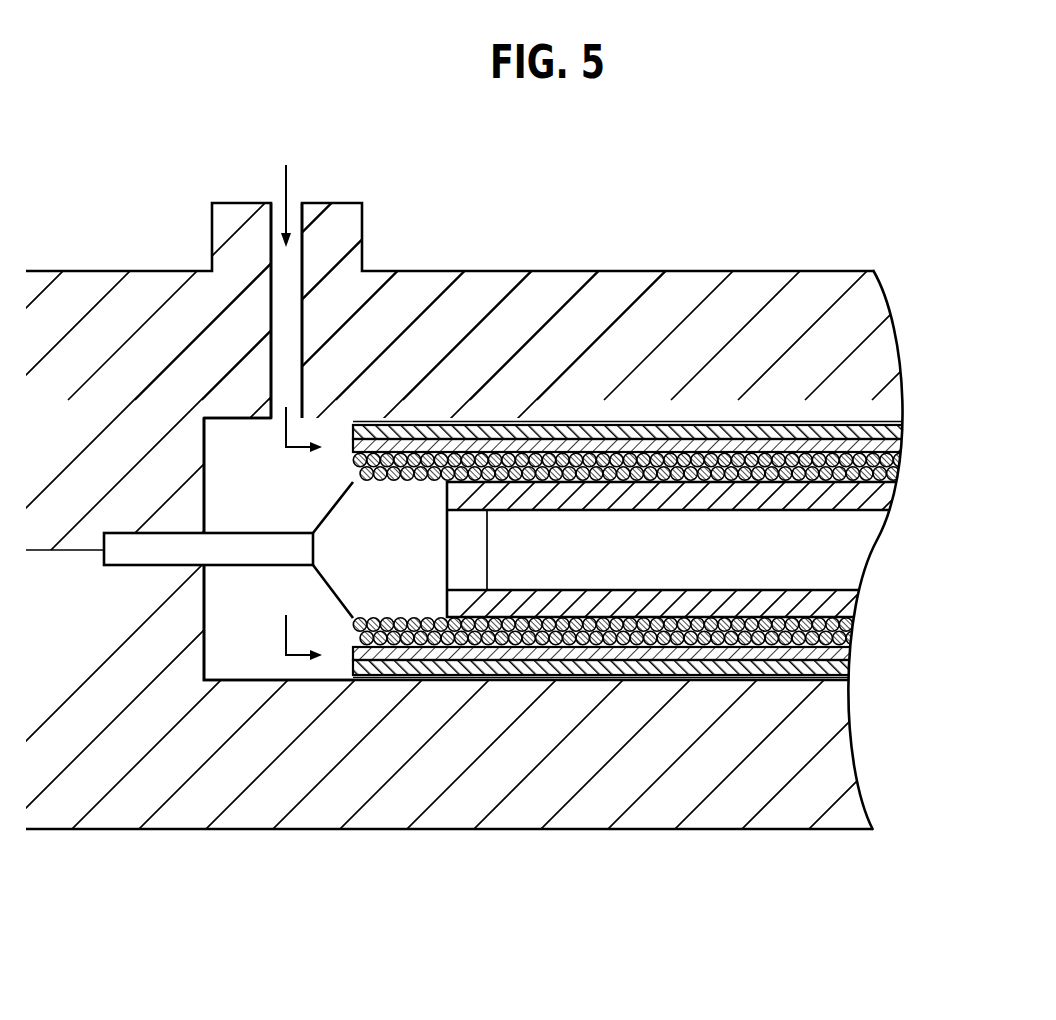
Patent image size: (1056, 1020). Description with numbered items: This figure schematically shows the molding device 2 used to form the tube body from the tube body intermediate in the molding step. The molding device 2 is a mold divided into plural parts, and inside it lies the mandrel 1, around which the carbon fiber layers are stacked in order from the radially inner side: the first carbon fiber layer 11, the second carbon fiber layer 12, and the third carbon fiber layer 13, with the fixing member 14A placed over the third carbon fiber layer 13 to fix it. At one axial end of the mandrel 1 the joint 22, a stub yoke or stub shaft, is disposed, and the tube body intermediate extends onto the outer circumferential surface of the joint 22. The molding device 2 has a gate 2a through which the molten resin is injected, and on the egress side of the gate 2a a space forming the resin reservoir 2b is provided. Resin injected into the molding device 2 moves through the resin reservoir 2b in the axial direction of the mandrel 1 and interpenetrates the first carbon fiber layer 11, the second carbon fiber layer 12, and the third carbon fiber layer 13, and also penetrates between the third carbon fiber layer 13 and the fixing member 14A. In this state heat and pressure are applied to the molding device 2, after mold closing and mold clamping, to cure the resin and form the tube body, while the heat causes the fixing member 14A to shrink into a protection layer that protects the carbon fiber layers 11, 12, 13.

The mandrel 1 is at (874, 497).
The molding device 2 is at (762, 180).
The gate 2a is at (300, 210).
The resin reservoir 2b is at (282, 502).
The first carbon fiber layer 11 is at (893, 467).
The second carbon fiber layer 12 is at (898, 455).
The third carbon fiber layer 13 is at (900, 437).
The fixing member 14A is at (900, 424).
The joint 22 is at (257, 560).